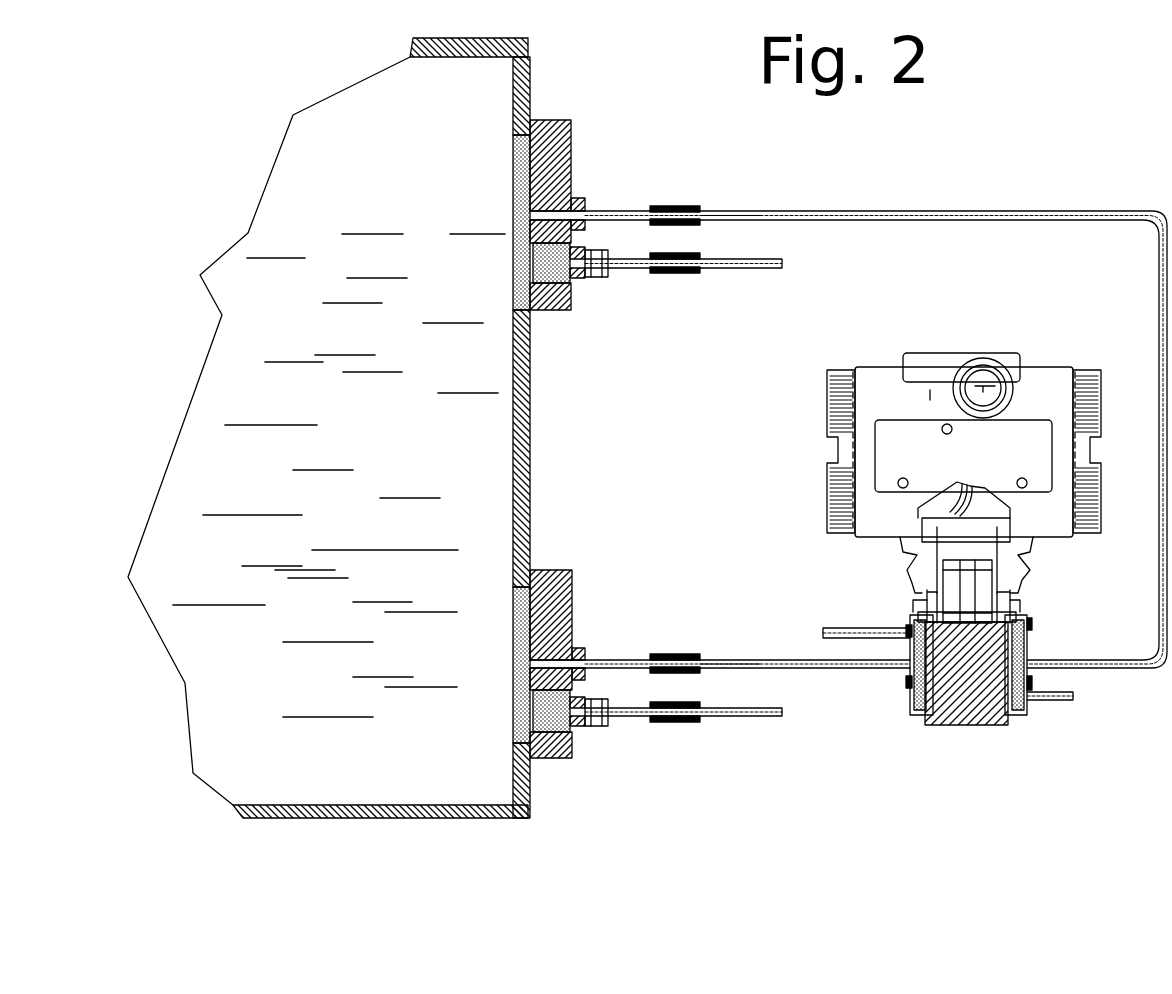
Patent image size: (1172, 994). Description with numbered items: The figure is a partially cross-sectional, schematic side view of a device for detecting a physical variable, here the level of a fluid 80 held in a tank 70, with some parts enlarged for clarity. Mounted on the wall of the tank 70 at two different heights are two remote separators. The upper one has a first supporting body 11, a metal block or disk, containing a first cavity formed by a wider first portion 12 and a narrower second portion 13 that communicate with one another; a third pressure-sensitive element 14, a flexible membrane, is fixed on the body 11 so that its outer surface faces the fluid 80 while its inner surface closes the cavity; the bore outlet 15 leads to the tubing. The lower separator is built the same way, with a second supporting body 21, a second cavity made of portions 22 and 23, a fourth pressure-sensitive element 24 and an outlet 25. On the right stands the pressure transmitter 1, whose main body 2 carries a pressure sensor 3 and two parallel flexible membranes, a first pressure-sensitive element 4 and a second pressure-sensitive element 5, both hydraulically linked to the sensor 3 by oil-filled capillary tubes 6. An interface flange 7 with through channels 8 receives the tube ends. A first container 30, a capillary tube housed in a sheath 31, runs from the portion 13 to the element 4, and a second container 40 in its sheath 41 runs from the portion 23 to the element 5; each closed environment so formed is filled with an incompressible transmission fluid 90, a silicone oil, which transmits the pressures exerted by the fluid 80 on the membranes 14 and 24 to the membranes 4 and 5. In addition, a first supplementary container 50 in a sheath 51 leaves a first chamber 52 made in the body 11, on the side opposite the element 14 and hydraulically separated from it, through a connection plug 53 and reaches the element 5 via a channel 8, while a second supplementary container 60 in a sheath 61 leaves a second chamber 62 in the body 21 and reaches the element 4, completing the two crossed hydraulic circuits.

The pressure transmitter 1 is at (805, 468).
The main body 2 is at (982, 355).
The pressure sensor 3 is at (975, 592).
The first pressure-sensitive element 4 is at (1015, 718).
The second pressure-sensitive element 5 is at (910, 625).
The capillary tubes 6 is at (925, 605).
The interface flange 7 is at (1025, 630).
The through channel 8 is at (1035, 690).
The first supporting body 11 is at (545, 120).
The first portion 12 is at (570, 122).
The second portion 13 is at (570, 188).
The third pressure-sensitive element 14 is at (572, 158).
The upper bore outlet 15 is at (588, 212).
The second supporting body 21 is at (543, 568).
The first portion of second cavity 22 is at (570, 577).
The second portion of second cavity 23 is at (570, 645).
The fourth pressure-sensitive element 24 is at (572, 615).
The lower bore outlet 25 is at (585, 660).
The first container 30 is at (1003, 210).
The sheath 31 is at (673, 207).
The second container 40 is at (770, 658).
The sheath 41 is at (672, 654).
The first supplementary container 50 is at (735, 262).
The sheath 51 is at (672, 270).
The first chamber 52 is at (553, 287).
The connection plug 53 is at (577, 272).
The second supplementary container 60 is at (735, 714).
The sheath 61 is at (672, 720).
The second chamber 62 is at (552, 745).
The tank 70 is at (532, 436).
The fluid 80 is at (470, 515).
The transmission fluid 90 is at (718, 213).